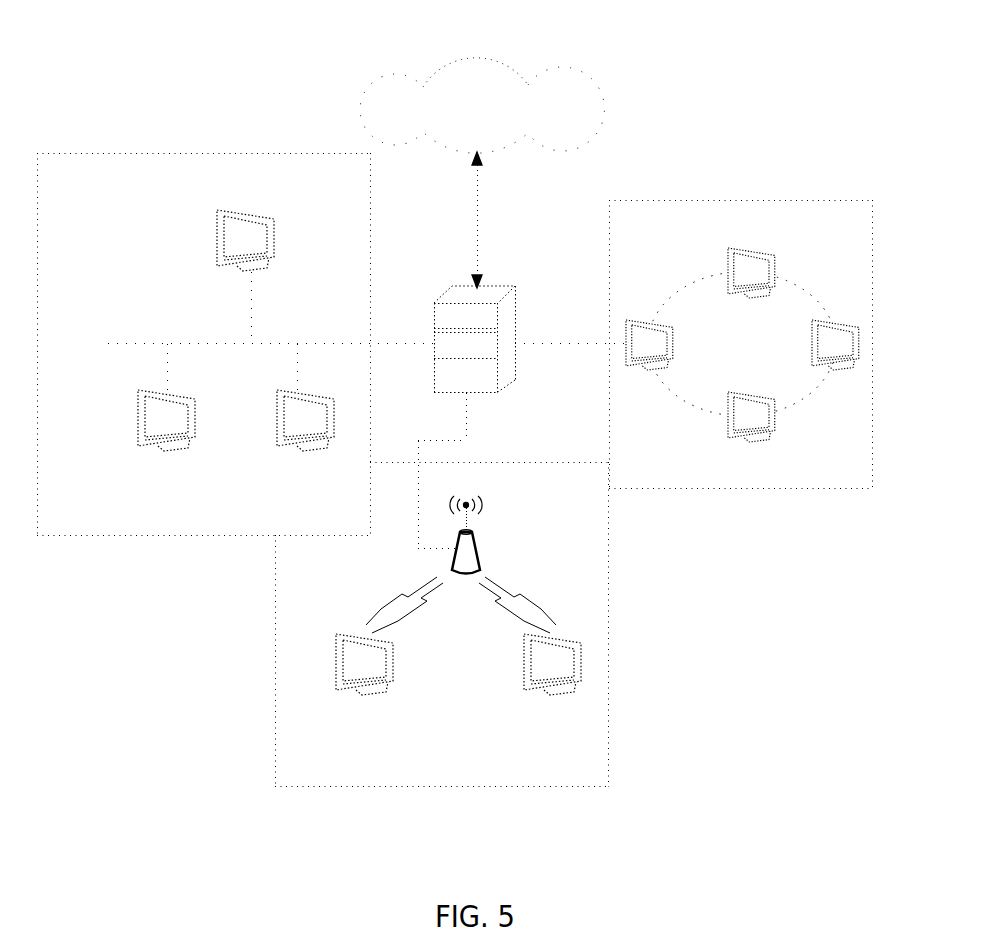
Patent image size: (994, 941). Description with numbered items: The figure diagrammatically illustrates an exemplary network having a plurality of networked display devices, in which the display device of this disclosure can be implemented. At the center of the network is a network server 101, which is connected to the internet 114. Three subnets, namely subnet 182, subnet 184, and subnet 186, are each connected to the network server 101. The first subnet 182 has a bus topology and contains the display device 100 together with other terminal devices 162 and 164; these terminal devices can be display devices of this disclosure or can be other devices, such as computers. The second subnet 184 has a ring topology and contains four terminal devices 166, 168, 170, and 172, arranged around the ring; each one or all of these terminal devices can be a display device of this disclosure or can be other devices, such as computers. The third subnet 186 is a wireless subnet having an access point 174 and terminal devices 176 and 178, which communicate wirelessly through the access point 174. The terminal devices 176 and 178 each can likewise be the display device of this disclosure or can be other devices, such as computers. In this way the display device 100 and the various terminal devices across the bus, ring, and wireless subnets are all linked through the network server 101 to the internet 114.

The internet 114 is at (490, 58).
The network server 101 is at (500, 300).
The display device 100 is at (217, 210).
The subnet 182 is at (275, 152).
The terminal device 162 is at (150, 449).
The terminal device 164 is at (290, 449).
The subnet 184 is at (727, 198).
The terminal device 166 is at (625, 325).
The terminal device 168 is at (752, 253).
The terminal device 170 is at (838, 342).
The terminal device 172 is at (752, 438).
The subnet 186 is at (609, 625).
The access point 174 is at (472, 500).
The terminal device 176 is at (370, 700).
The terminal device 178 is at (548, 700).